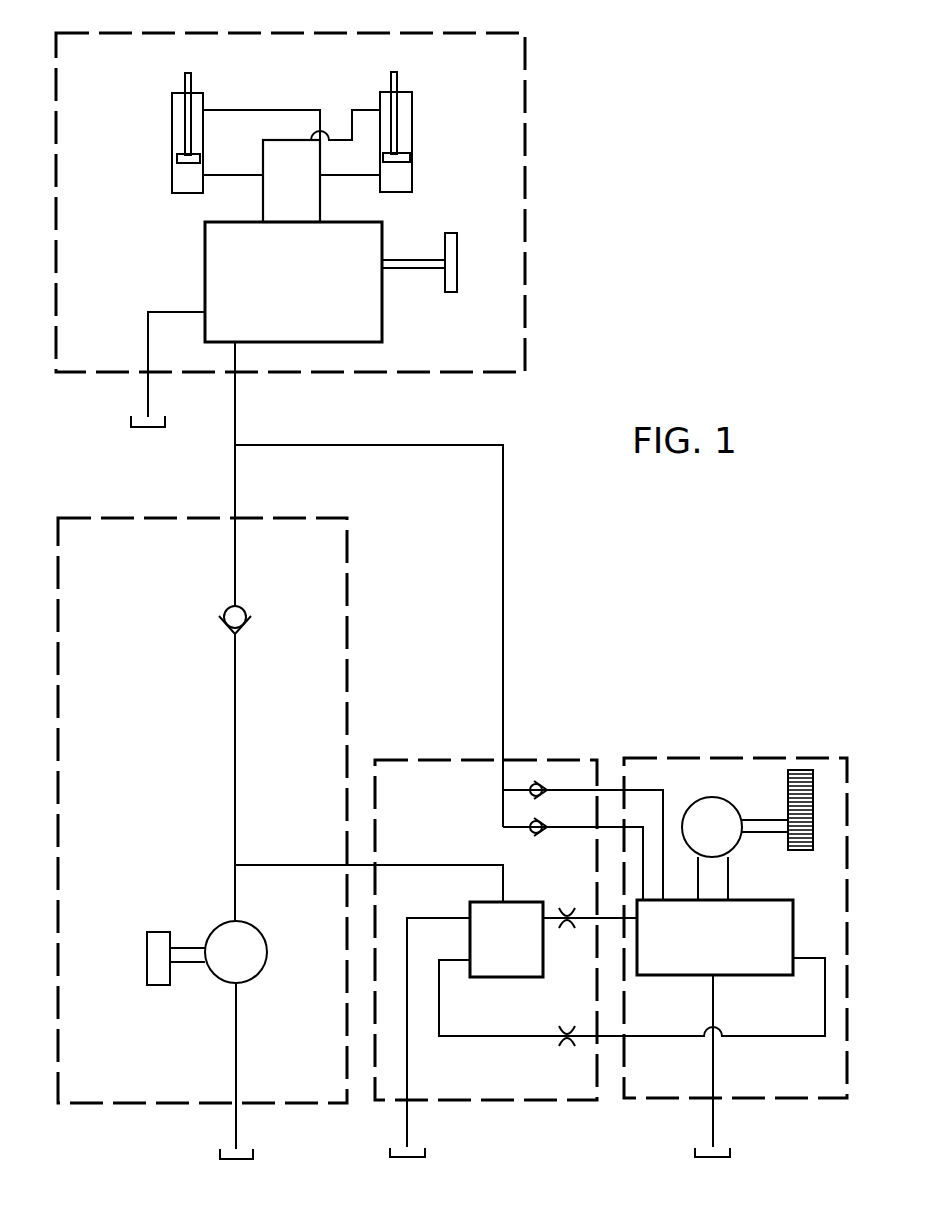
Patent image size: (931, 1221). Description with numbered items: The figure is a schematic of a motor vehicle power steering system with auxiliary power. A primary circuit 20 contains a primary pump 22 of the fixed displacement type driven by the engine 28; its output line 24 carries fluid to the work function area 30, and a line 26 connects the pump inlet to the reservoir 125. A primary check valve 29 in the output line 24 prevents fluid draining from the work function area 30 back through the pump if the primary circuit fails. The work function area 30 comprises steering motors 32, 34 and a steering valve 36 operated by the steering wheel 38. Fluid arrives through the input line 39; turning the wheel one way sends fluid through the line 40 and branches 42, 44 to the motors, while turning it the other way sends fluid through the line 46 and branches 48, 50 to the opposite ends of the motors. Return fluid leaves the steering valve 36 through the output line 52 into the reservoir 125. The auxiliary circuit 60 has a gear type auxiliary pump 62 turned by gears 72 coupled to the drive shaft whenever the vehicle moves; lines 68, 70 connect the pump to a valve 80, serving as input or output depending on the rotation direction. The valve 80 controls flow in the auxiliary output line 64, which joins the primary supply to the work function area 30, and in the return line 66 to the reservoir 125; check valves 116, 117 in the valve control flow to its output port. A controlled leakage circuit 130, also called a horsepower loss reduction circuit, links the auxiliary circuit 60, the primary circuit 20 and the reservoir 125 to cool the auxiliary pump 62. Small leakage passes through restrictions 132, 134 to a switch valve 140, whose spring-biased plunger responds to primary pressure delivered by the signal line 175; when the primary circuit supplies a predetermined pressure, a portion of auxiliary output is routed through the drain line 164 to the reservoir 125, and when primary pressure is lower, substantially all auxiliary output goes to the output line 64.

The primary circuit 20 is at (347, 554).
The primary pump 22 is at (256, 925).
The output line 24 is at (235, 783).
The line 26 is at (236, 1030).
The engine 28 is at (150, 932).
The primary check valve 29 is at (250, 622).
The work function area 30 is at (525, 160).
The motor 32 is at (412, 172).
The motor 34 is at (172, 175).
The steering valve 36 is at (312, 288).
The steering wheel 38 is at (457, 278).
The input line 39 is at (235, 406).
The line 40 is at (263, 202).
The branch 42 is at (352, 110).
The branch 44 is at (233, 169).
The line 46 is at (320, 203).
The branch 48 is at (255, 101).
The branch 50 is at (350, 175).
The output line 52 is at (160, 312).
The auxiliary circuit 60 is at (758, 758).
The auxiliary pump 62 is at (724, 798).
The output line 64 is at (503, 584).
The return line 66 is at (713, 1075).
The line 68 is at (728, 874).
The line 70 is at (698, 887).
The gears 72 is at (824, 786).
The valve 80 is at (732, 950).
The check valve 116 is at (530, 788).
The check valve 117 is at (530, 825).
The reservoir 125 is at (165, 423).
The controlled leakage circuit 130 is at (562, 760).
The restriction 132 is at (567, 1046).
The restriction 134 is at (562, 907).
The switch valve 140 is at (531, 952).
The drain line 164 is at (407, 1077).
The signal line 175 is at (288, 865).